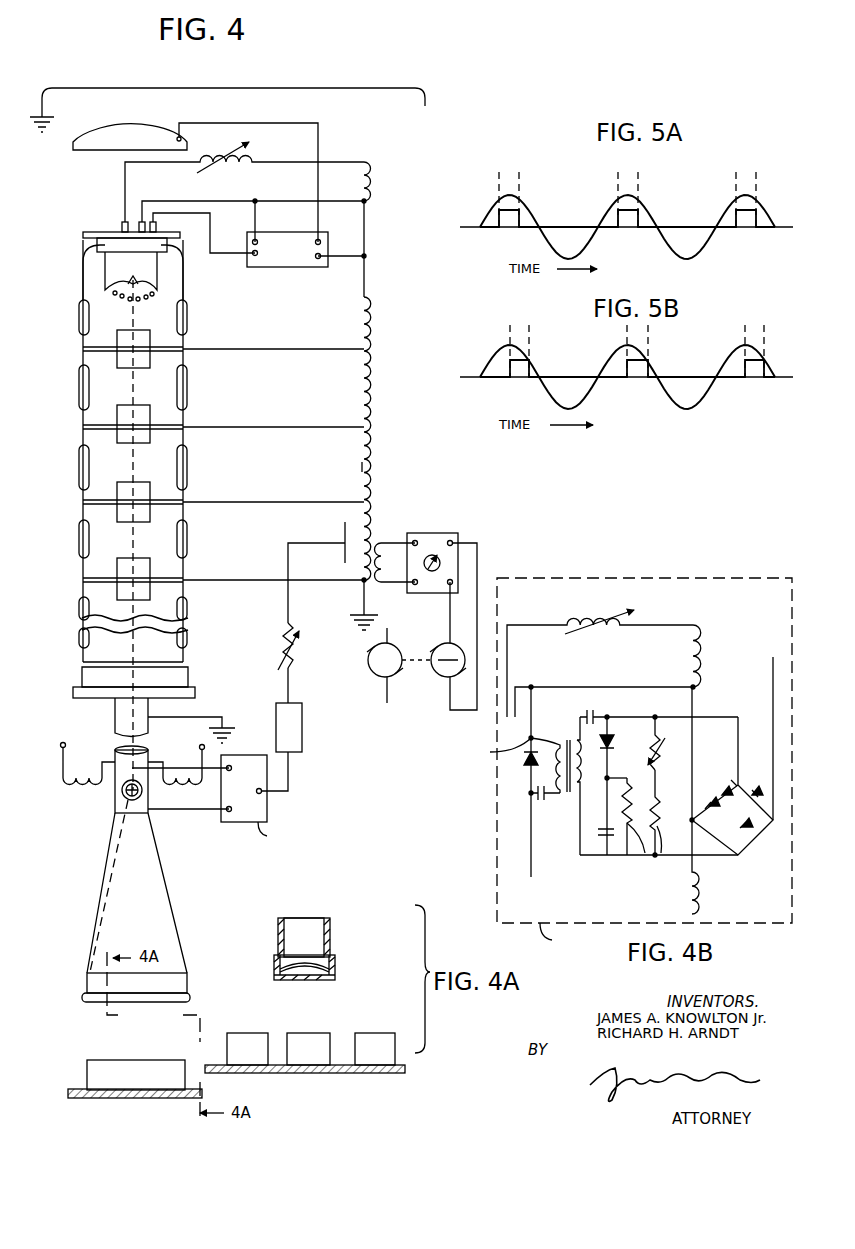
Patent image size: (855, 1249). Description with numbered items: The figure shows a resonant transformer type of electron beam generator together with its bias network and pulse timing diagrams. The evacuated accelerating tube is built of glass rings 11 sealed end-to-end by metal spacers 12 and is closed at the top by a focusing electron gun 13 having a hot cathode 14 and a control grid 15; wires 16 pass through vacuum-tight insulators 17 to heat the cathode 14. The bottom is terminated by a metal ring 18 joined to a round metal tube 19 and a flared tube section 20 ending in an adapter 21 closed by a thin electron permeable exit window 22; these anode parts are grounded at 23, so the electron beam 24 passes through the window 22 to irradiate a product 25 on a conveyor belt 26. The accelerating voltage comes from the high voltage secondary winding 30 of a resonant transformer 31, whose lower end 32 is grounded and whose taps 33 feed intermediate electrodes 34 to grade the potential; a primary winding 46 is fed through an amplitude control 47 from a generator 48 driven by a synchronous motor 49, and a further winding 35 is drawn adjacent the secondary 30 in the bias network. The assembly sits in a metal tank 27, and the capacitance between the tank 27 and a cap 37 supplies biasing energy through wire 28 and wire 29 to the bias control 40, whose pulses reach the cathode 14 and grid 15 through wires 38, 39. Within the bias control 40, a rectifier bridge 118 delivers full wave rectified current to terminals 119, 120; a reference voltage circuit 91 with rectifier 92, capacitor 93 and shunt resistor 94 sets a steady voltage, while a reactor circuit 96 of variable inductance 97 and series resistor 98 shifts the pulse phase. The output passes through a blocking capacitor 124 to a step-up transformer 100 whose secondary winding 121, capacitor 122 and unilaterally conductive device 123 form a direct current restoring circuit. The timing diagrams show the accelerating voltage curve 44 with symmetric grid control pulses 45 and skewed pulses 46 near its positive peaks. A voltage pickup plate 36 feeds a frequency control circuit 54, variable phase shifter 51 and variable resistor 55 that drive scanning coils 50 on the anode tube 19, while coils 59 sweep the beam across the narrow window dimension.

In FIG. 4, the glass rings 11 is at (79, 388).
In FIG. 4, the metal spacers 12 is at (83, 348).
In FIG. 4, the focusing electron gun 13 is at (88, 262).
In FIG. 4, the hot cathode 14 is at (108, 291).
In FIG. 4, the control grid 15 is at (158, 300).
In FIG. 4, the wires 16 is at (189, 200).
In FIG. 4B, the wires 16 is at (531, 686).
In FIG. 4, the vacuum-tight insulators 17 is at (119, 224).
In FIG. 4, the metal ring 18 is at (82, 677).
In FIG. 4, the round metal tube 19 is at (115, 716).
In FIG. 4, the flared tube section 20 is at (166, 898).
In FIG. 4A, the flared tube section 20 is at (330, 931).
In FIG. 4, the adapter 21 is at (86, 986).
In FIG. 4A, the adapter 21 is at (275, 971).
In FIG. 4A, the exit window 22 is at (318, 977).
In FIG. 4, the ground connection 23 is at (226, 727).
In FIG. 4, the electron beam 24 is at (103, 880).
In FIG. 4, the product 25 is at (87, 1066).
In FIG. 4A, the product 25 is at (373, 1033).
In FIG. 4, the conveyor belt 26 is at (70, 1098).
In FIG. 4A, the conveyor belt 26 is at (283, 1074).
In FIG. 4, the metal tank 27 is at (152, 88).
In FIG. 4, the wire 28 is at (318, 129).
In FIG. 4B, the wire 28 is at (773, 679).
In FIG. 4, the wire 29 is at (349, 257).
In FIG. 4B, the wire 29 is at (695, 856).
In FIG. 4, the high voltage secondary winding 30 is at (370, 378).
In FIG. 4B, the high voltage secondary winding 30 is at (697, 904).
In FIG. 4, the resonant transformer 31 is at (361, 467).
In FIG. 4, the lower end of secondary winding 32 is at (360, 614).
In FIG. 4, the taps 33 is at (238, 349).
In FIG. 4, the intermediate electrodes 34 is at (150, 362).
In FIG. 4, the coil 35 is at (371, 197).
In FIG. 4B, the coil 35 is at (700, 658).
In FIG. 4, the voltage pickup plate 36 is at (345, 537).
In FIG. 4, the cap 37 is at (120, 127).
In FIG. 4, the wire 38 is at (257, 233).
In FIG. 4B, the wire 38 is at (532, 728).
In FIG. 4, the wire 39 is at (212, 238).
In FIG. 4B, the wire 39 is at (531, 806).
In FIG. 4, the bias control 40 is at (241, 265).
In FIG. 4B, the bias control 40 is at (575, 952).
In FIG. 5A, the accelerating voltage curve 44 is at (650, 210).
In FIG. 5B, the accelerating voltage curve 44 is at (724, 361).
In FIG. 5A, the grid control pulses 45 is at (514, 220).
In FIG. 4, the grid control pulses 46 is at (380, 544).
In FIG. 5B, the grid control pulses 46 is at (510, 374).
In FIG. 4, the amplitude control 47 is at (457, 522).
In FIG. 4, the generator 48 is at (452, 677).
In FIG. 4, the synchronous motor 49 is at (396, 690).
In FIG. 4, the electromagnetic coils 50 is at (125, 798).
In FIG. 4, the variable phase shifter 51 is at (293, 662).
In FIG. 4, the frequency control circuit 54 is at (268, 818).
In FIG. 4, the variable resistor 55 is at (302, 731).
In FIG. 4, the scanning coils 59 is at (68, 787).
In FIG. 4B, the reference voltage circuit 91 is at (634, 773).
In FIG. 4B, the rectifier 92 is at (611, 743).
In FIG. 4B, the capacitor 93 is at (603, 852).
In FIG. 4B, the shunt resistor 94 is at (633, 856).
In FIG. 4B, the reactor circuit 96 is at (657, 790).
In FIG. 4B, the variable inductance 97 is at (659, 746).
In FIG. 4B, the series resistor 98 is at (661, 850).
In FIG. 4B, the step-up transformer 100 is at (552, 795).
In FIG. 4B, the rectifier bridge 118 is at (749, 829).
In FIG. 4B, the output terminal 119 is at (737, 786).
In FIG. 4B, the output terminal 120 is at (742, 857).
In FIG. 4B, the secondary winding 121 is at (546, 746).
In FIG. 4B, the capacitor 122 is at (534, 828).
In FIG. 4B, the unilaterally conductive device 123 is at (490, 752).
In FIG. 4B, the blocking capacitor 124 is at (595, 716).